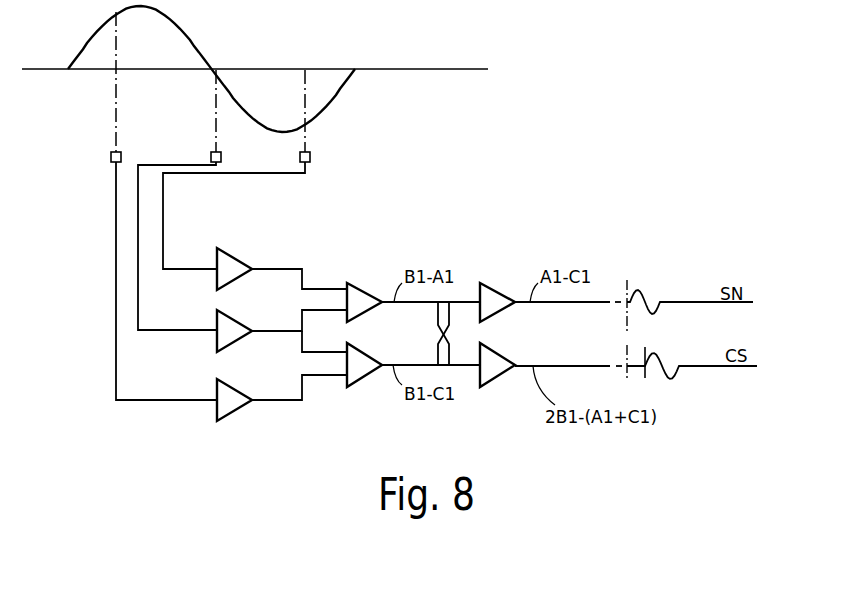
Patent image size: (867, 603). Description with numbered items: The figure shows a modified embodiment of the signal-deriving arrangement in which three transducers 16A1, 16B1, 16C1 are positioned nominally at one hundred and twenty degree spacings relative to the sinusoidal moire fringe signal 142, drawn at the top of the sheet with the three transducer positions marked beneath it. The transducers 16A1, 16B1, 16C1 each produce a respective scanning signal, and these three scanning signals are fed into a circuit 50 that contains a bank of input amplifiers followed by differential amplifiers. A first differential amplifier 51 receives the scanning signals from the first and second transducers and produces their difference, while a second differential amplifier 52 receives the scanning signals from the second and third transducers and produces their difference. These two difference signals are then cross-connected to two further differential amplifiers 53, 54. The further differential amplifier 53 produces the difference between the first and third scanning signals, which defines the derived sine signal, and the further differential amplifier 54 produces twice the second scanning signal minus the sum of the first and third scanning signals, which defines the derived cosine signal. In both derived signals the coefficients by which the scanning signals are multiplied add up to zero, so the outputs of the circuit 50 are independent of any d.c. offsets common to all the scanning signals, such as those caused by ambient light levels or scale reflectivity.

The moire fringe signal 142 is at (203, 53).
The transducer 16C1 is at (138, 150).
The transducer 16B1 is at (238, 150).
The transducer 16A1 is at (327, 150).
The circuit 50 is at (98, 412).
The differential amplifier 51 is at (365, 270).
The differential amplifier 52 is at (354, 383).
The further differential amplifier 53 is at (498, 270).
The further differential amplifier 54 is at (487, 383).